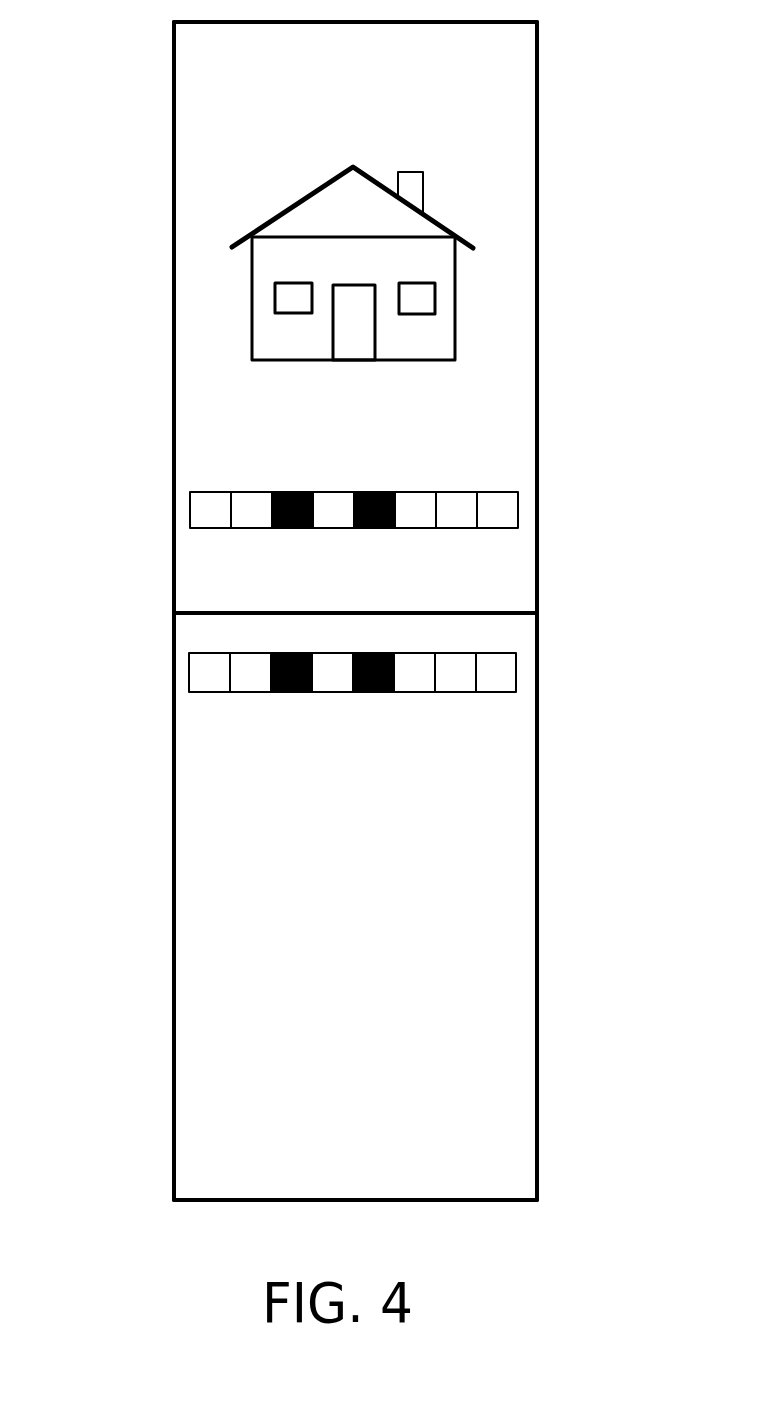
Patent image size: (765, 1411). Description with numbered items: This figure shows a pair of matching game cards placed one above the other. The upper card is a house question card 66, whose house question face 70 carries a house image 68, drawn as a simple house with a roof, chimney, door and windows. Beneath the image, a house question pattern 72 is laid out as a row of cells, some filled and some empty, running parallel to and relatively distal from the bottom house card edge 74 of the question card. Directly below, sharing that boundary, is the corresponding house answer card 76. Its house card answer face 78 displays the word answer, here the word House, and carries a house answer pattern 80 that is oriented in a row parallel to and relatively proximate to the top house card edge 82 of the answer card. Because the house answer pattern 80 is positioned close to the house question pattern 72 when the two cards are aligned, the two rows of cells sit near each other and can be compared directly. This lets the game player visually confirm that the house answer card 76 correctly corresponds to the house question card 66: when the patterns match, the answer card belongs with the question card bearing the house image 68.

The house question card 66 is at (127, 291).
The house image 68 is at (393, 227).
The house question face 70 is at (240, 98).
The house question pattern 72 is at (255, 525).
The bottom house card edge 74 is at (433, 613).
The house answer card 76 is at (125, 786).
The house card answer face 78 is at (237, 1081).
The house answer pattern 80 is at (410, 690).
The top house card edge 82 is at (492, 615).